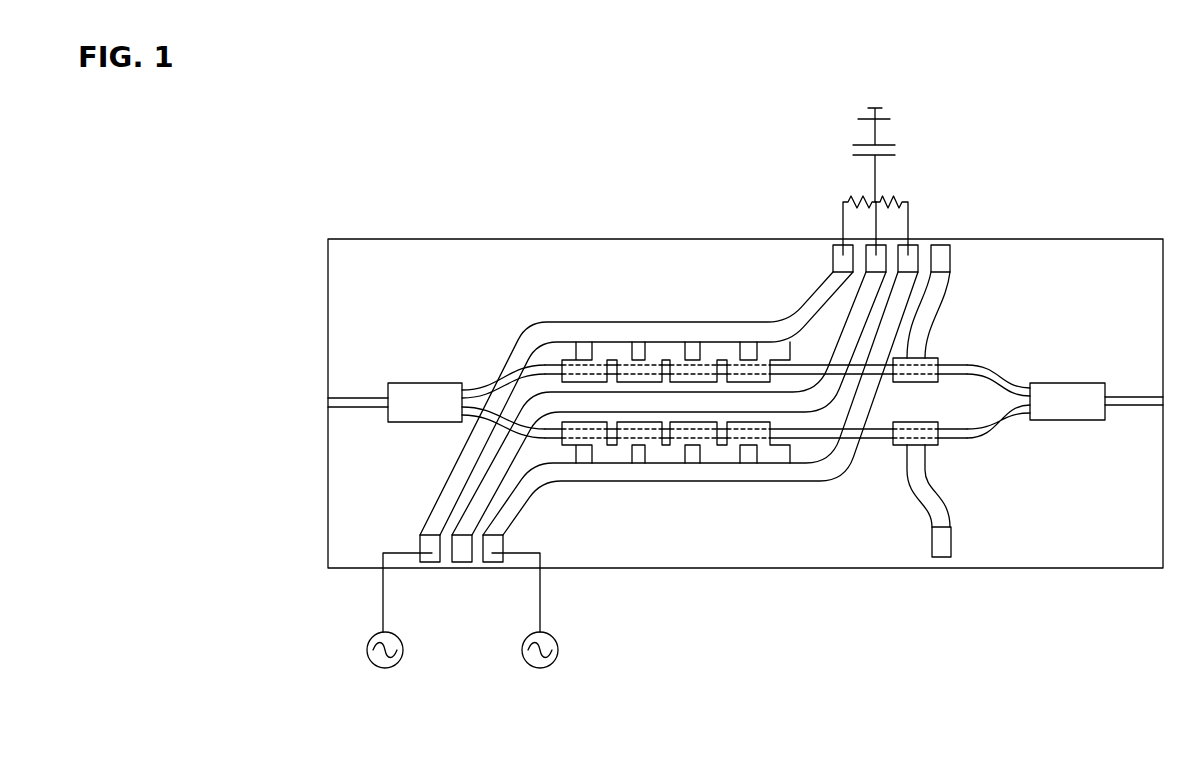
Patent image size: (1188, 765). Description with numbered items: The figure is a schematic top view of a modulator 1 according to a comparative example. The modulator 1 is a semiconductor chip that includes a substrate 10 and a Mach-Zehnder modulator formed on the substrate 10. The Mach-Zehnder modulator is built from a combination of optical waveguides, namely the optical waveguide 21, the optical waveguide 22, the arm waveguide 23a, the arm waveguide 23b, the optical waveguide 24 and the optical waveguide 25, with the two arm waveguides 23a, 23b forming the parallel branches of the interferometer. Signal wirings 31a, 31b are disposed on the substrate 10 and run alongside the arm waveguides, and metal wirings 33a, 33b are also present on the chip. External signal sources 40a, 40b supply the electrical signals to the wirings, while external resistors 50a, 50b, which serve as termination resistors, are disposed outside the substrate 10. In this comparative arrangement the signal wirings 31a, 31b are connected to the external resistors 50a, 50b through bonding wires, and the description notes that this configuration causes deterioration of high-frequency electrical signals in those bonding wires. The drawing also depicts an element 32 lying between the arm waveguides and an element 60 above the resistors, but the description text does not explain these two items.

The modulator 1 is at (1024, 199).
The substrate 10 is at (1121, 552).
The optical waveguide 21 is at (362, 397).
The optical waveguide 22 is at (425, 383).
The arm waveguide 23a is at (793, 364).
The arm waveguide 23b is at (847, 443).
The optical waveguide 24 is at (1055, 383).
The optical waveguide 25 is at (1135, 397).
The signal wiring 31a is at (617, 332).
The signal wiring 31b is at (617, 472).
The ground electrode 32 is at (773, 400).
The metal wiring 33a is at (949, 283).
The metal wiring 33b is at (950, 513).
The external signal source 40a is at (383, 668).
The external signal source 40b is at (540, 668).
The external resistor 50a is at (855, 198).
The external resistor 50b is at (897, 196).
The ground terminal 60 is at (862, 143).